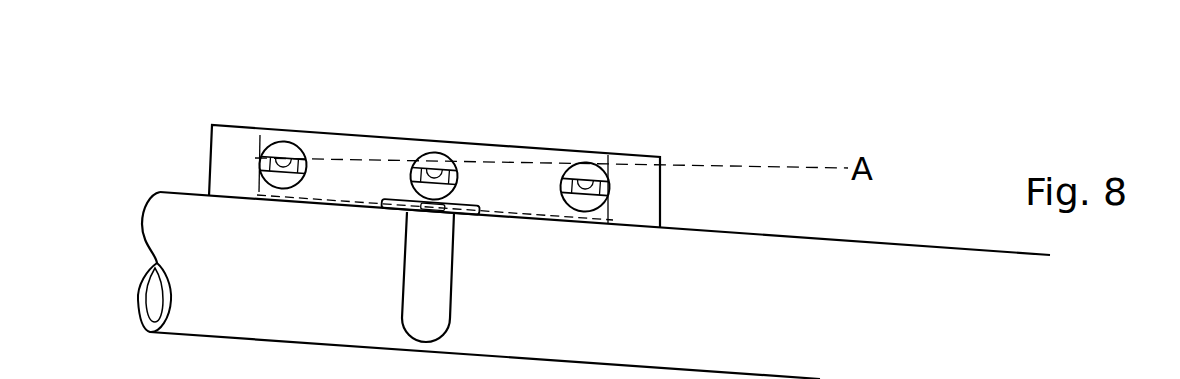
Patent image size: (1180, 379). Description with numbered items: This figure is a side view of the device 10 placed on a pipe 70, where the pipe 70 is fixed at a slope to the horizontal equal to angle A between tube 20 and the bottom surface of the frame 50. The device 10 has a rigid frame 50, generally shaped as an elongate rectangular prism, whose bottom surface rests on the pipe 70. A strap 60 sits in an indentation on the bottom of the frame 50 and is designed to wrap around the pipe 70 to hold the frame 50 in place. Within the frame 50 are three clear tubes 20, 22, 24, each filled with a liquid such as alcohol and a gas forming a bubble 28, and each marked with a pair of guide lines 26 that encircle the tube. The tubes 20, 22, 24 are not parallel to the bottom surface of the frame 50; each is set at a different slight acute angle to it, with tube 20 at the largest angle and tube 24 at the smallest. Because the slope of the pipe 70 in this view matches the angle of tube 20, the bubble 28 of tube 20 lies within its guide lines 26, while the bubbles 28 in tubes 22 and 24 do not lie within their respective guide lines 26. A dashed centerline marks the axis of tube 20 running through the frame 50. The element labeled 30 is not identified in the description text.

The device 10 is at (174, 154).
The tube 20 is at (260, 163).
The tube 22 is at (458, 178).
The tube 24 is at (608, 182).
The guide lines 26 is at (319, 128).
The bubble 28 is at (305, 112).
The screw head 30 is at (269, 125).
The frame 50 is at (586, 140).
The strap 60 is at (417, 285).
The pipe 70 is at (177, 212).